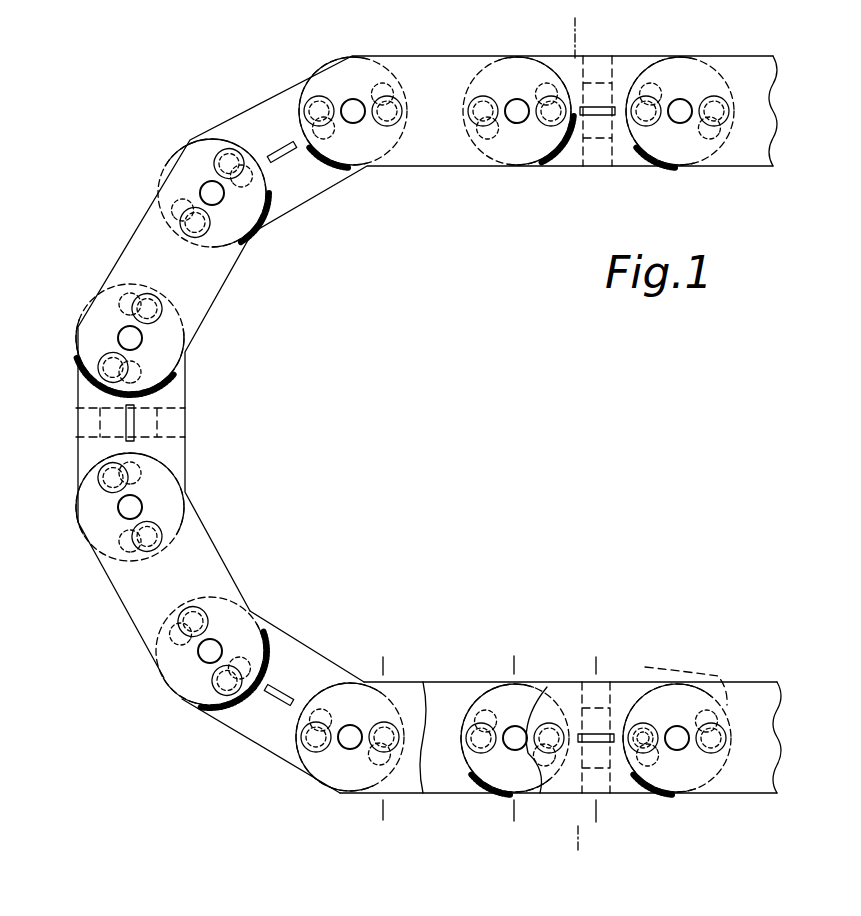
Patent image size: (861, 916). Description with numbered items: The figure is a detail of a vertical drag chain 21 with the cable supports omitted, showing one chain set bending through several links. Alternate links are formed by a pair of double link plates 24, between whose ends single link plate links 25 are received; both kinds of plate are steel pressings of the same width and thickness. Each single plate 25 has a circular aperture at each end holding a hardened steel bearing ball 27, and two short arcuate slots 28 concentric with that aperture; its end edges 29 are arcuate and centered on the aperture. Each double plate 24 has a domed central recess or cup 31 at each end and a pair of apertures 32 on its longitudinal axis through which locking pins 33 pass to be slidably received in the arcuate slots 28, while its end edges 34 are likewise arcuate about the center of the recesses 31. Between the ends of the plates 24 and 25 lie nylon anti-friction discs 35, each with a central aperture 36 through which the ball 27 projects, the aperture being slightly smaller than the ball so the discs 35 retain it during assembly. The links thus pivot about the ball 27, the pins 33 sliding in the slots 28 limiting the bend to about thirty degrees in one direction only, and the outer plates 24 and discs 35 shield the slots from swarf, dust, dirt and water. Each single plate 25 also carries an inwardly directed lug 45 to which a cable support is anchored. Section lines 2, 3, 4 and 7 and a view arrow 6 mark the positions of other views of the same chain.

The vertical drag chain 21 is at (239, 106).
The link plates 24 is at (413, 675).
The single link plate links 25 is at (279, 637).
The bearing ball 27 is at (505, 745).
The arcuate slots 28 is at (334, 710).
The end edges 29 is at (404, 806).
The domed central recess or cup 31 is at (676, 726).
The apertures 32 is at (656, 747).
The locking pins 33 is at (311, 757).
The end edges 34 is at (290, 734).
The anti-friction discs 35 is at (512, 714).
The central aperture 36 is at (540, 690).
The lug 45 is at (285, 689).
The section line 2- 2 is at (379, 659).
The section line 3- 3 is at (509, 658).
The section line 4- 4 is at (590, 659).
The view arrow 6 is at (733, 12).
The section line 7- 7 is at (567, 37).